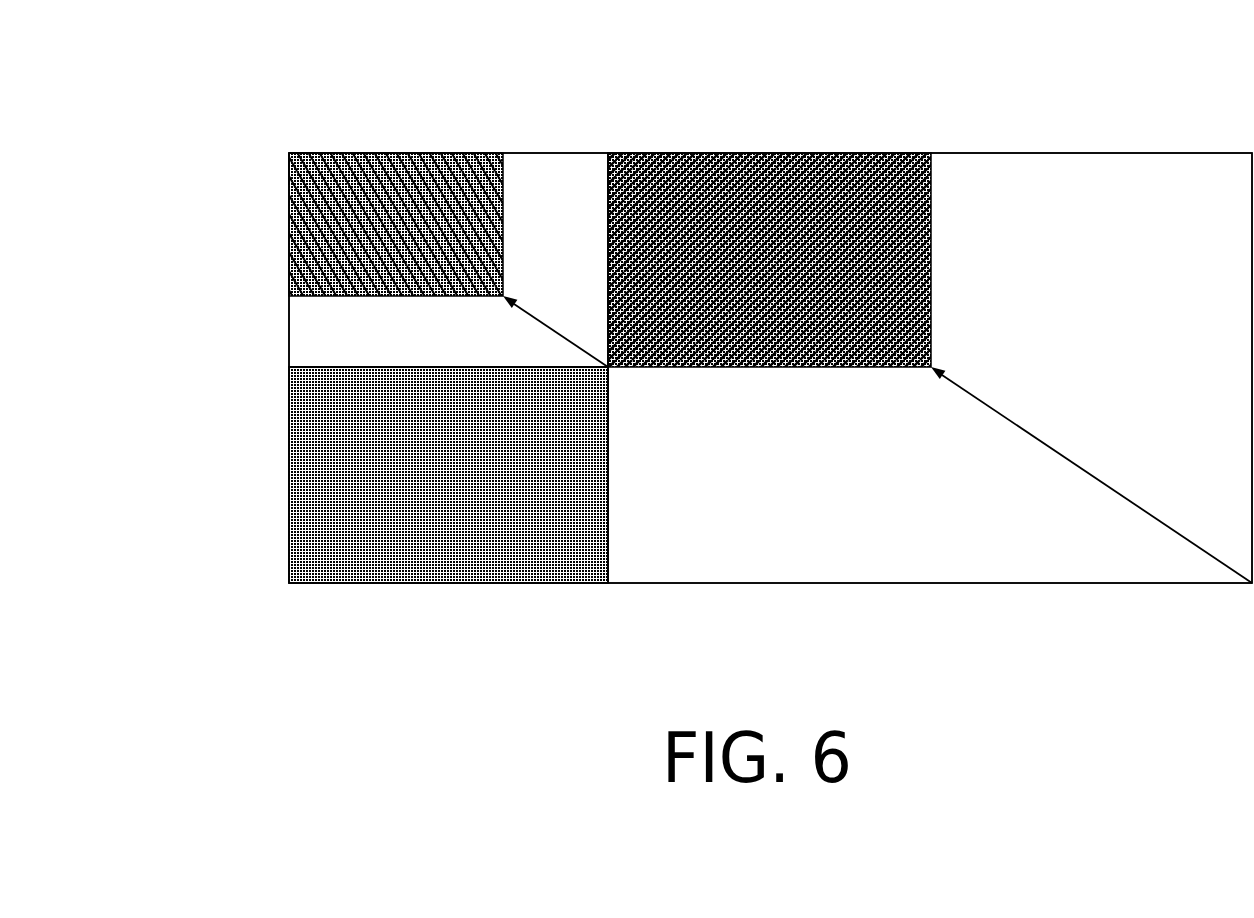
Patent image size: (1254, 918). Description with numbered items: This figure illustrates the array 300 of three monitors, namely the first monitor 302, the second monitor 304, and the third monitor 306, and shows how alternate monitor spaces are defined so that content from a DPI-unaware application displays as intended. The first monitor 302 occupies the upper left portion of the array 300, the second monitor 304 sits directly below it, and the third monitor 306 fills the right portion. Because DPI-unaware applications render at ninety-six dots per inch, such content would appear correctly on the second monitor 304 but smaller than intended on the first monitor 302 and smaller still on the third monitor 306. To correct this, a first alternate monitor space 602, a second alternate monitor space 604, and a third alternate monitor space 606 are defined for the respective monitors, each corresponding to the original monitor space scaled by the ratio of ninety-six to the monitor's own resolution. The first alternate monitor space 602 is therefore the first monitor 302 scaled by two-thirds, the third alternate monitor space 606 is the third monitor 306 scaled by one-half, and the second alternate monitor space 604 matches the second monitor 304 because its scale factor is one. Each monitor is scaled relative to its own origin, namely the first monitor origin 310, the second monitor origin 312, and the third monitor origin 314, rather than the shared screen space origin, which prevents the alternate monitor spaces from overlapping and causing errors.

The array of monitors 300 is at (412, 71).
The first monitor 302 is at (536, 343).
The second monitor 304 is at (536, 542).
The third monitor 306 is at (1018, 549).
The first monitor origin 310 is at (289, 152).
The second monitor origin 312 is at (289, 366).
The third monitor origin 314 is at (608, 152).
The first alternate monitor space 602 is at (378, 243).
The second alternate monitor space 604 is at (396, 456).
The third alternate monitor space 606 is at (787, 243).